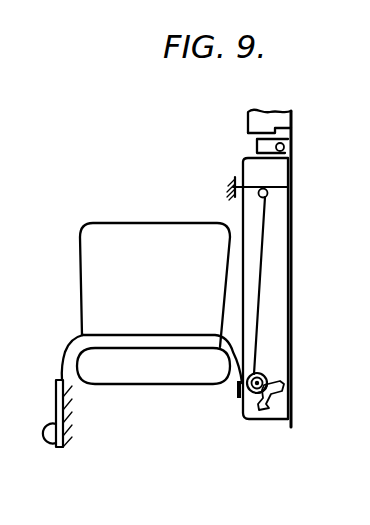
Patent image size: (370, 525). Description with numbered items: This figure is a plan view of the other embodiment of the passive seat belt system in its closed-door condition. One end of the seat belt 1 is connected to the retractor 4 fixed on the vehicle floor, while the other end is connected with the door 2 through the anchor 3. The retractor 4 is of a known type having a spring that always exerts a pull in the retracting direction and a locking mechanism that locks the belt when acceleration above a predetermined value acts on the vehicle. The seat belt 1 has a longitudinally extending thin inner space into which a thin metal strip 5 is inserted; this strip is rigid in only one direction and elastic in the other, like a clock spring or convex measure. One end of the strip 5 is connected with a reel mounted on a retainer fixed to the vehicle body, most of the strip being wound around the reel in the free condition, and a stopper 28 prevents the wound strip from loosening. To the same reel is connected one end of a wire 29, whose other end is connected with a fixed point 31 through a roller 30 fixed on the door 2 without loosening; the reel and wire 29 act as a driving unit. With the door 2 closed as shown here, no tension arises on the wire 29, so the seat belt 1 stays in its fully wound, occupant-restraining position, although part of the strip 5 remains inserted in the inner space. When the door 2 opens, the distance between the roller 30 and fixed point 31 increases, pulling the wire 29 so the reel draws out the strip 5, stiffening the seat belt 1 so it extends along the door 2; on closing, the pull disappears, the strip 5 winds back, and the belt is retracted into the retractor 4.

The seat belt 1 is at (72, 340).
The door 2 is at (277, 332).
The anchor 3 is at (233, 389).
The retractor 4 is at (55, 441).
The thin metal strip 5 is at (269, 379).
The stopper 28 is at (272, 402).
The wire 29 is at (266, 238).
The roller 30 is at (288, 187).
The fixed point 31 is at (235, 179).